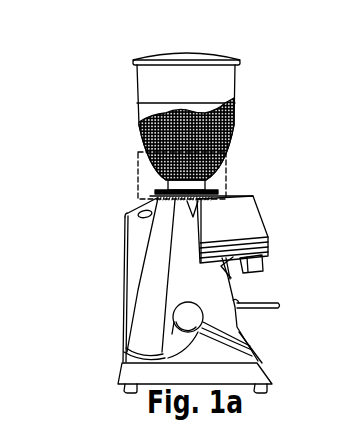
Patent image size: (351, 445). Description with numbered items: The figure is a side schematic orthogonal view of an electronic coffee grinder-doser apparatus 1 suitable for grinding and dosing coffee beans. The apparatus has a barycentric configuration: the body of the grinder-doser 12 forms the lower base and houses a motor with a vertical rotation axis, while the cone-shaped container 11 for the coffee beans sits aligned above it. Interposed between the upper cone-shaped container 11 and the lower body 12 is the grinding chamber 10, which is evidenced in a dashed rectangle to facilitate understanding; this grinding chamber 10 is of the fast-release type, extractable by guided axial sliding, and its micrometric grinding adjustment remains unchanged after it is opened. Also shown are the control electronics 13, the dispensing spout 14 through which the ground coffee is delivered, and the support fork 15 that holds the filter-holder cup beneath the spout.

The coffee grinder-doser apparatus 1 is at (80, 63).
The grinding chamber 10 is at (137, 163).
The cone-shaped container 11 is at (222, 92).
The body of the grinder-doser 12 is at (153, 243).
The control electronics 13 is at (248, 197).
The dispensing spout 14 is at (267, 235).
The support fork 15 is at (273, 275).